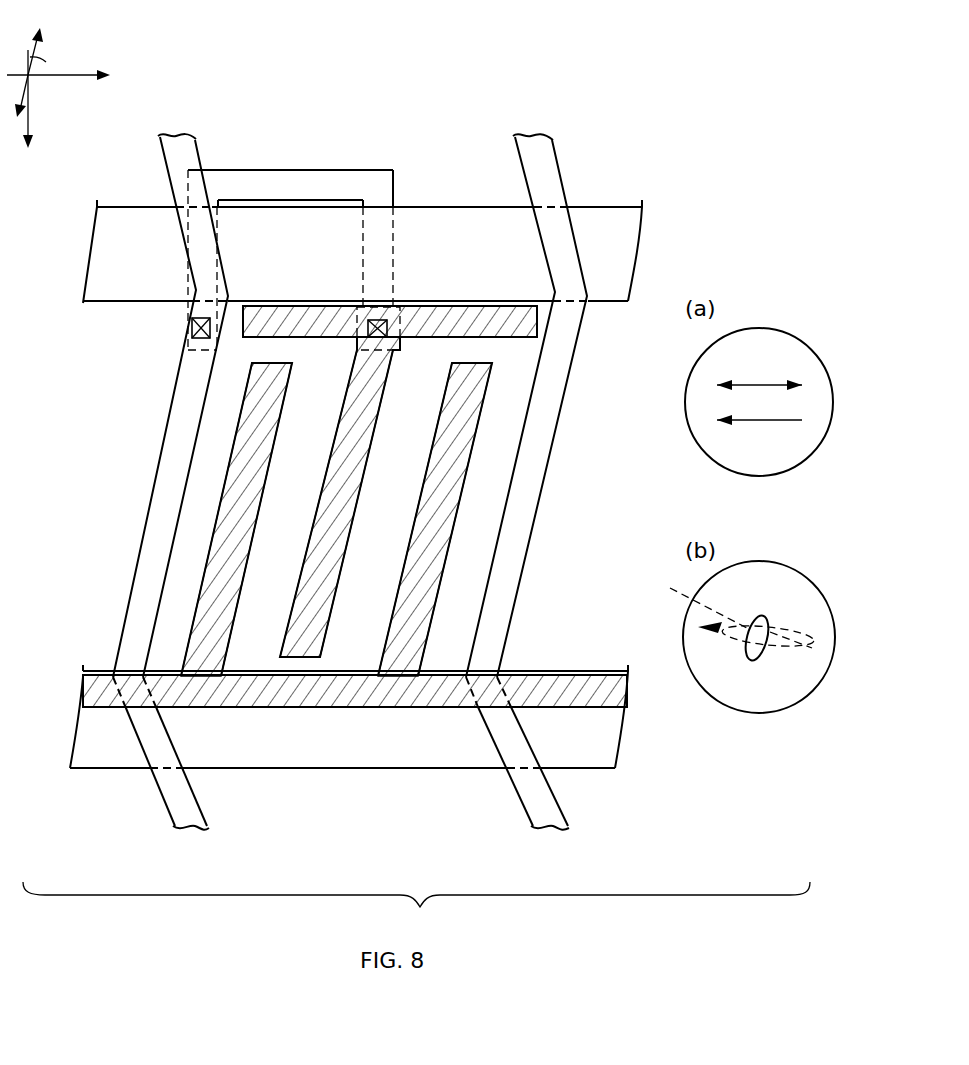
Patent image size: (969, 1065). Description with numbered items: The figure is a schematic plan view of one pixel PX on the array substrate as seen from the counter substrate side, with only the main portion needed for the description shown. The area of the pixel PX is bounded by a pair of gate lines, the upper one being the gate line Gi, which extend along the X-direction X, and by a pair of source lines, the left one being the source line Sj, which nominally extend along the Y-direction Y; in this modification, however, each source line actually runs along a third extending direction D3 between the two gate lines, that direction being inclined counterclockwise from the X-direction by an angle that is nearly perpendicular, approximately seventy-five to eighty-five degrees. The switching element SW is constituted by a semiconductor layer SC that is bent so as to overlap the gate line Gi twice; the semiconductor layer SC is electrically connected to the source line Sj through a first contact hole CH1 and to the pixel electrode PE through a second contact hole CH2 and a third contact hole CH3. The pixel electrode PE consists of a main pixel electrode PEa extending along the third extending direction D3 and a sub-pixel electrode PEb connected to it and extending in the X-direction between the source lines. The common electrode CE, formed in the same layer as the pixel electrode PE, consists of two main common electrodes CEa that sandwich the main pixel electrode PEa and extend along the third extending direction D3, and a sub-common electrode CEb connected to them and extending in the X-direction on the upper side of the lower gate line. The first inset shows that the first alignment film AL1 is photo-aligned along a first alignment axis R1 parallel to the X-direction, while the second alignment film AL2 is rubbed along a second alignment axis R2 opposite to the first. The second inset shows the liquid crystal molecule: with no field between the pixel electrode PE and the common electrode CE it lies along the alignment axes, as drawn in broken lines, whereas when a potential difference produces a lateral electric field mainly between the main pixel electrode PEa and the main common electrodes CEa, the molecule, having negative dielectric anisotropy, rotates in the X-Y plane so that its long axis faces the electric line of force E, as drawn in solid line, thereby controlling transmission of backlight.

The X-direction X is at (66, 76).
The Y-direction Y is at (28, 113).
The third extending direction D3 is at (39, 61).
The gate line Gi is at (131, 203).
The source line Sj is at (203, 807).
The switching element SW is at (257, 150).
The semiconductor layer SC is at (340, 168).
The contact hole CH1 is at (198, 346).
The contact hole CH2 is at (440, 260).
The contact hole CH3 is at (393, 324).
The pixel electrode PE is at (390, 448).
The main pixel electrode PEa is at (347, 387).
The sub-pixel electrode PEb is at (286, 303).
The common electrode CE is at (350, 593).
The main common electrode CEa is at (233, 451).
The sub-common electrode CEb is at (366, 709).
The pixel PX is at (616, 158).
The first alignment axis R1 is at (794, 341).
The first alignment film AL1 is at (768, 384).
The second alignment axis R2 is at (715, 459).
The second alignment film AL2 is at (760, 421).
The electric line of force E is at (697, 602).